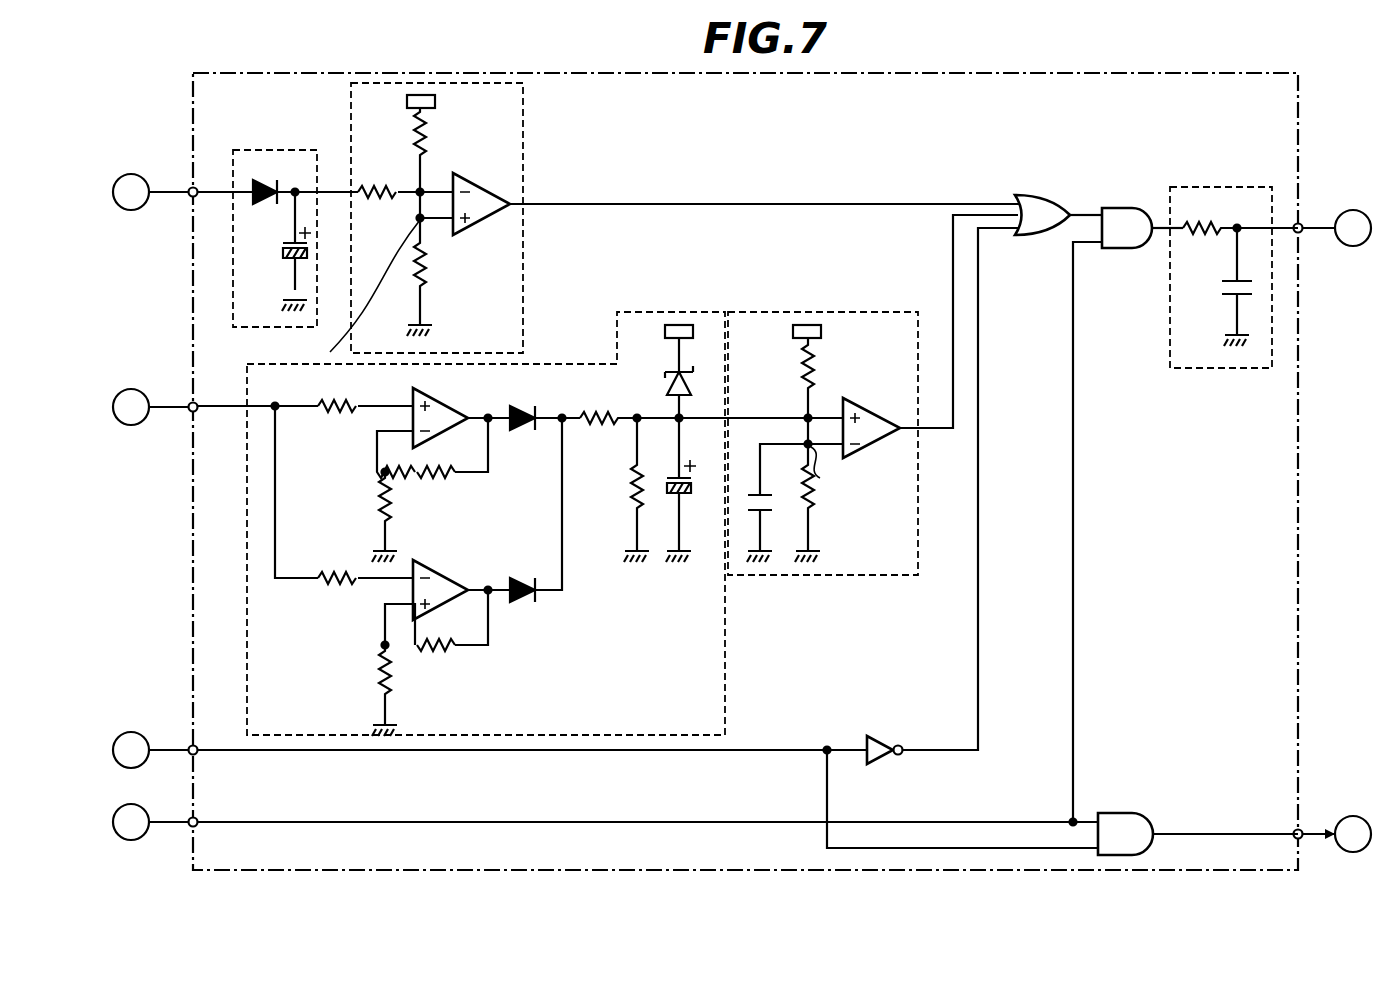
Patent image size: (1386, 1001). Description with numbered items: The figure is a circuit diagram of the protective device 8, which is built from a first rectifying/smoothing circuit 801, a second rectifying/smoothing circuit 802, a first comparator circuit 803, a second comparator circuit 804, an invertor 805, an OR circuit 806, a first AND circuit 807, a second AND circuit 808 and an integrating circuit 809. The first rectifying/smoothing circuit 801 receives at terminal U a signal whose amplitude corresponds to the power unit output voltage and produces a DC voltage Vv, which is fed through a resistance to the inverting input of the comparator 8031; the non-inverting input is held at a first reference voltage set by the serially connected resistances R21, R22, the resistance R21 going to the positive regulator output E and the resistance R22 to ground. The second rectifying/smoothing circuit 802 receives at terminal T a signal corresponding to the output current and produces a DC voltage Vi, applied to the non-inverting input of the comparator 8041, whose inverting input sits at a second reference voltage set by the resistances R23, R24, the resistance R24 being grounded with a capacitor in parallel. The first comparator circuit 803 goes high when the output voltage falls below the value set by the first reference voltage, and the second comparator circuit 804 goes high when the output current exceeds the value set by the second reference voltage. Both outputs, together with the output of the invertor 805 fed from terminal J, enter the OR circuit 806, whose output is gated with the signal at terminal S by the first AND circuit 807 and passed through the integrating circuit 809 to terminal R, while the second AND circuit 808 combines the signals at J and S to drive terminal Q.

The protective device 8 is at (930, 73).
The first rectifying/smoothing circuit 801 is at (278, 150).
The second rectifying/smoothing circuit 802 is at (727, 605).
The first comparator circuit 803 is at (485, 218).
The comparator 8031 is at (505, 185).
The second comparator circuit 804 is at (823, 411).
The comparator 8041 is at (880, 416).
The invertor 805 is at (876, 742).
The OR circuit 806 is at (1045, 194).
The first AND circuit 807 is at (1120, 207).
The second AND circuit 808 is at (1135, 812).
The integrating circuit 809 is at (1215, 186).
The resistance R21 is at (425, 150).
The resistance R22 is at (425, 268).
The resistance R23 is at (815, 370).
The resistance R24 is at (812, 500).